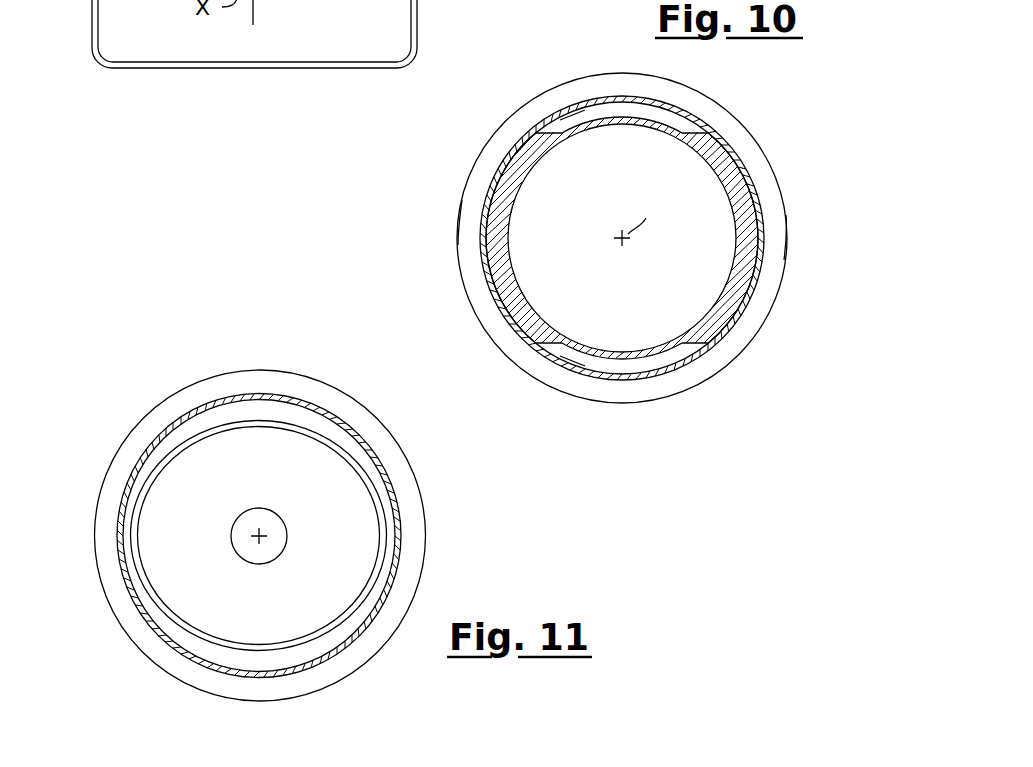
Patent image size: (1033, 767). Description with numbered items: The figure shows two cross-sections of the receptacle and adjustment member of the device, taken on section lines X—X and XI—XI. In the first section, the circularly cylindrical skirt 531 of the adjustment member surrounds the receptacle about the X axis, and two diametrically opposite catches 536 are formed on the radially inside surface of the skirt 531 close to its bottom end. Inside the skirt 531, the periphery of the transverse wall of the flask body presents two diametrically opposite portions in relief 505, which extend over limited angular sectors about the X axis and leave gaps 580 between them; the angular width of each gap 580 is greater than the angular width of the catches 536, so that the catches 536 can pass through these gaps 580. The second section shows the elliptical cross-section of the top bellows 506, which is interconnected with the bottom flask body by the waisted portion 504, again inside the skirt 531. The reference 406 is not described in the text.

In FIG. 10, the shaft axis / bore 406 is at (648, 306).
In FIG. 11, the waisted portion 504 is at (285, 518).
In FIG. 10, the portions in relief 505 is at (532, 146).
In FIG. 11, the bellows 506 is at (162, 466).
In FIG. 10, the skirt 531 is at (762, 210).
In FIG. 11, the skirt 531 is at (180, 421).
In FIG. 10, the catches 536 is at (484, 208).
In FIG. 10, the gaps 580 is at (575, 118).